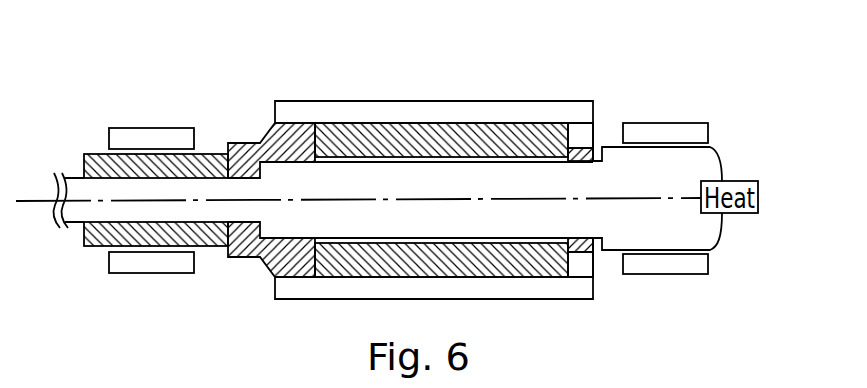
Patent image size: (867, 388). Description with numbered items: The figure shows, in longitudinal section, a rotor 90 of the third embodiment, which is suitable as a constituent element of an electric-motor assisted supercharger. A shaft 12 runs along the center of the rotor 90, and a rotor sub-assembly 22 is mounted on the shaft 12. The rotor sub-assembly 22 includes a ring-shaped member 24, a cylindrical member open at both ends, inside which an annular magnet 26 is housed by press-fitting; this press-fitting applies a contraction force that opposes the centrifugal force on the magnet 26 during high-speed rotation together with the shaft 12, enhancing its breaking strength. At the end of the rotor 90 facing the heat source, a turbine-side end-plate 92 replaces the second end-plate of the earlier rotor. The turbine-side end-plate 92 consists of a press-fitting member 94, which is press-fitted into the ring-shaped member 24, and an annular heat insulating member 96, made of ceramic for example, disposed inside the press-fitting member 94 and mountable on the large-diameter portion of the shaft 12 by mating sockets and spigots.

The shaft 12 is at (268, 157).
The rotor sub-assembly 22 is at (278, 103).
The ring-shaped member 24 is at (365, 110).
The magnet 26 is at (435, 137).
The rotor 90 is at (278, 38).
The turbine-side end-plate 92 is at (647, 37).
The press-fitting member 94 is at (580, 127).
The heat insulating member 96 is at (580, 155).